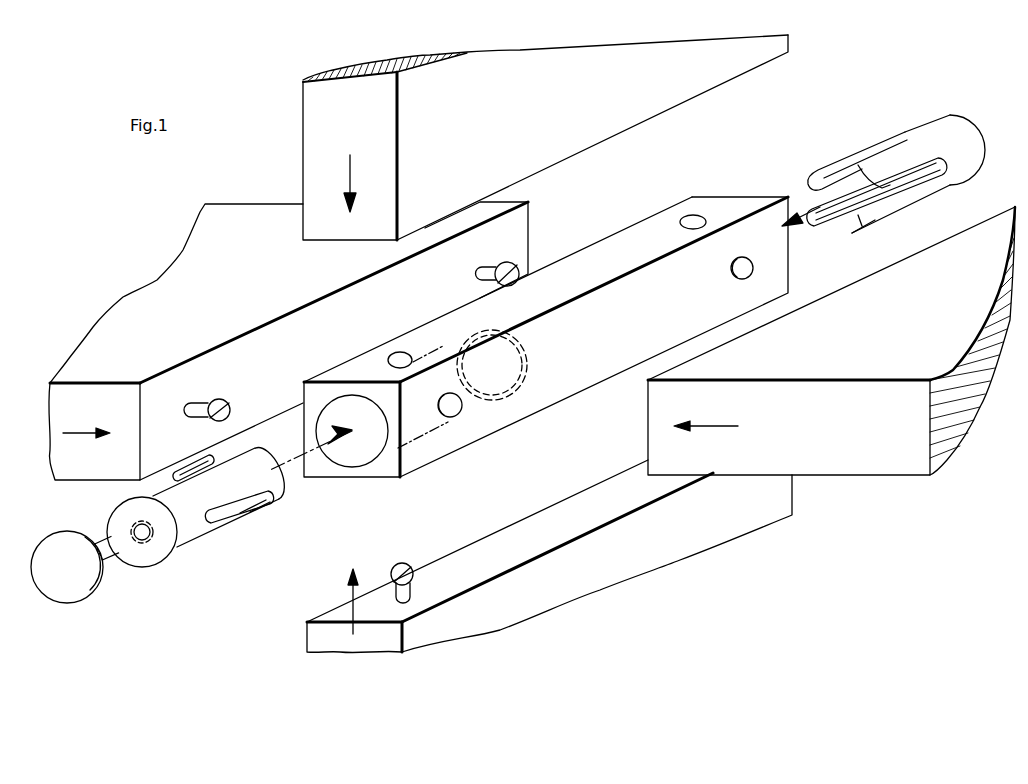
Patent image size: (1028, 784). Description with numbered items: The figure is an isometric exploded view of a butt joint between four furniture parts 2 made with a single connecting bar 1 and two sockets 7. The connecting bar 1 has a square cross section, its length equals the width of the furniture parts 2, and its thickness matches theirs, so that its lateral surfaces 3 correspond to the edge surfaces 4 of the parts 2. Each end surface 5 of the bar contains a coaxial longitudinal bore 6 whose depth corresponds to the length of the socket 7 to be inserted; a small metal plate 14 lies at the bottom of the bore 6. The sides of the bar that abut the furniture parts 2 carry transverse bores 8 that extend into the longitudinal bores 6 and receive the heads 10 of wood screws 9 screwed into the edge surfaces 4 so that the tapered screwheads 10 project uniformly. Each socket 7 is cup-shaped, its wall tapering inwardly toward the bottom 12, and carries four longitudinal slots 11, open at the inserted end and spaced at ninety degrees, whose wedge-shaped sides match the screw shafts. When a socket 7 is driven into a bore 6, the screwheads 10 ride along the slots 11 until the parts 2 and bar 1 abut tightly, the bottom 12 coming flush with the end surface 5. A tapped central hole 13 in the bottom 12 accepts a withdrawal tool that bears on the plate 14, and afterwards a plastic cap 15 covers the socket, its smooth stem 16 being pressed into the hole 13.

The connecting bar 1 is at (556, 341).
The furniture parts 2 is at (527, 60).
The lateral surfaces 3 is at (603, 247).
The edge surfaces 4 is at (323, 308).
The end surfaces 5 is at (373, 480).
The longitudinal bores 6 is at (343, 455).
The sockets 7 is at (508, 362).
The transverse bores 8 is at (395, 353).
The wood screws 9 is at (196, 403).
The screwheads 10 is at (230, 404).
The longitudinal slots 11 is at (253, 507).
The bottom 12 is at (147, 557).
The tapped central hole 13 is at (133, 527).
The metal plate 14 is at (530, 373).
The cap 15 is at (65, 594).
The stem 16 is at (112, 562).